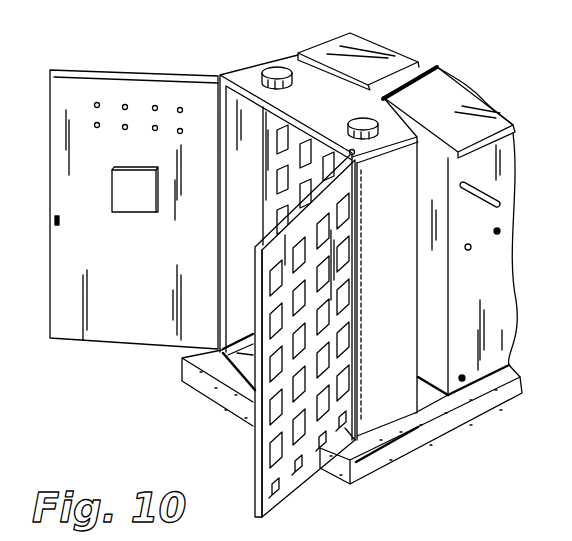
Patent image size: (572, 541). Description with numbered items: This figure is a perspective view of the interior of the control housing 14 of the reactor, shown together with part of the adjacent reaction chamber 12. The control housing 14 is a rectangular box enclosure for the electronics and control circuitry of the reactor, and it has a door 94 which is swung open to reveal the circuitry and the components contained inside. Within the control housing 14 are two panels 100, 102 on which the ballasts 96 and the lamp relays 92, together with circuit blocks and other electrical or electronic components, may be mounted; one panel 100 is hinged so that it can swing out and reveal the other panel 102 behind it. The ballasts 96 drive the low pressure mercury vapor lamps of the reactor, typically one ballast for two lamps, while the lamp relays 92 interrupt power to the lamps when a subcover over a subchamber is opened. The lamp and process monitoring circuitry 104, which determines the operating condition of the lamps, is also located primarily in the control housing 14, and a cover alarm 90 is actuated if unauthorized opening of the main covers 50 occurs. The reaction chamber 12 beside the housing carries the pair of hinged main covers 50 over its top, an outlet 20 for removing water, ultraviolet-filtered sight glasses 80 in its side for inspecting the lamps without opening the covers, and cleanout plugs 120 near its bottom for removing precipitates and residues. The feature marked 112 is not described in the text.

The reaction chamber 12 is at (490, 298).
The control housing 14 is at (386, 301).
The outlet 20 is at (490, 196).
The main covers 50 is at (366, 52).
The sight glasses 80 is at (500, 231).
The cover alarm 90 is at (277, 68).
The lamp relays 92 is at (313, 470).
The door 94 is at (84, 90).
The ballasts 96 is at (280, 183).
The panel 100 is at (252, 482).
The panel 102 is at (313, 148).
The lamp and process monitoring circuitry 104 is at (132, 210).
The hinge gap 112 is at (403, 118).
The cleanout plugs 120 is at (463, 380).